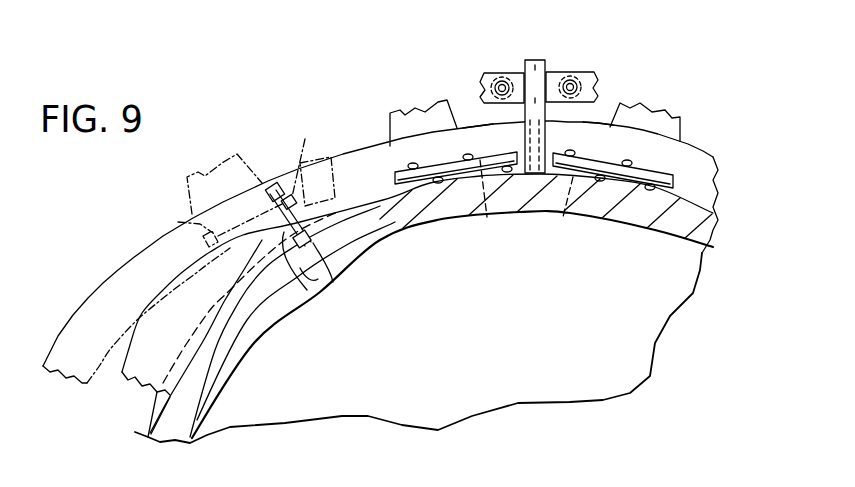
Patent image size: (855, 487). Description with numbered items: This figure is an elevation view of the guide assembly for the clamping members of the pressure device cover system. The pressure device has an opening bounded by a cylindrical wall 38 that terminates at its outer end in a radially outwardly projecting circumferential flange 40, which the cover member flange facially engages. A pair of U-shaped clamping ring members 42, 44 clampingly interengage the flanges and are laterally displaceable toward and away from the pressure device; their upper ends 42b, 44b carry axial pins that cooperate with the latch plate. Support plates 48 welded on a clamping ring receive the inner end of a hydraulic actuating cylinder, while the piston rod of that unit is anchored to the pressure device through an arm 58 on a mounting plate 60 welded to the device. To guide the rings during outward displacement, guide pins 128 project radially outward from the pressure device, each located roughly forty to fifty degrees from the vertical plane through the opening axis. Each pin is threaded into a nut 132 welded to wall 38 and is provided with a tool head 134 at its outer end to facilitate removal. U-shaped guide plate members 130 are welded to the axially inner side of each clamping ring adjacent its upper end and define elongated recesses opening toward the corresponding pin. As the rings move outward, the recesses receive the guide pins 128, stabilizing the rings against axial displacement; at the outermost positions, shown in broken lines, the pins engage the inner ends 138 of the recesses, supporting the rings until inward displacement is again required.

The cylindrical wall 38 is at (200, 418).
The circumferential flange 40 is at (148, 437).
The clamping ring member 42 is at (371, 160).
The upper end of clamping ring member 42b is at (481, 131).
The clamping ring member 44 is at (694, 158).
The upper end of clamping ring member 44b is at (592, 128).
The support plates 48 is at (417, 118).
The arm 58 is at (520, 72).
The mounting plate 60 is at (538, 60).
The guide pins 128 is at (307, 292).
The guide plate members 130 is at (178, 222).
The nut 132 is at (320, 272).
The tool head 134 is at (283, 182).
The inner ends of guide recesses 138 is at (439, 183).